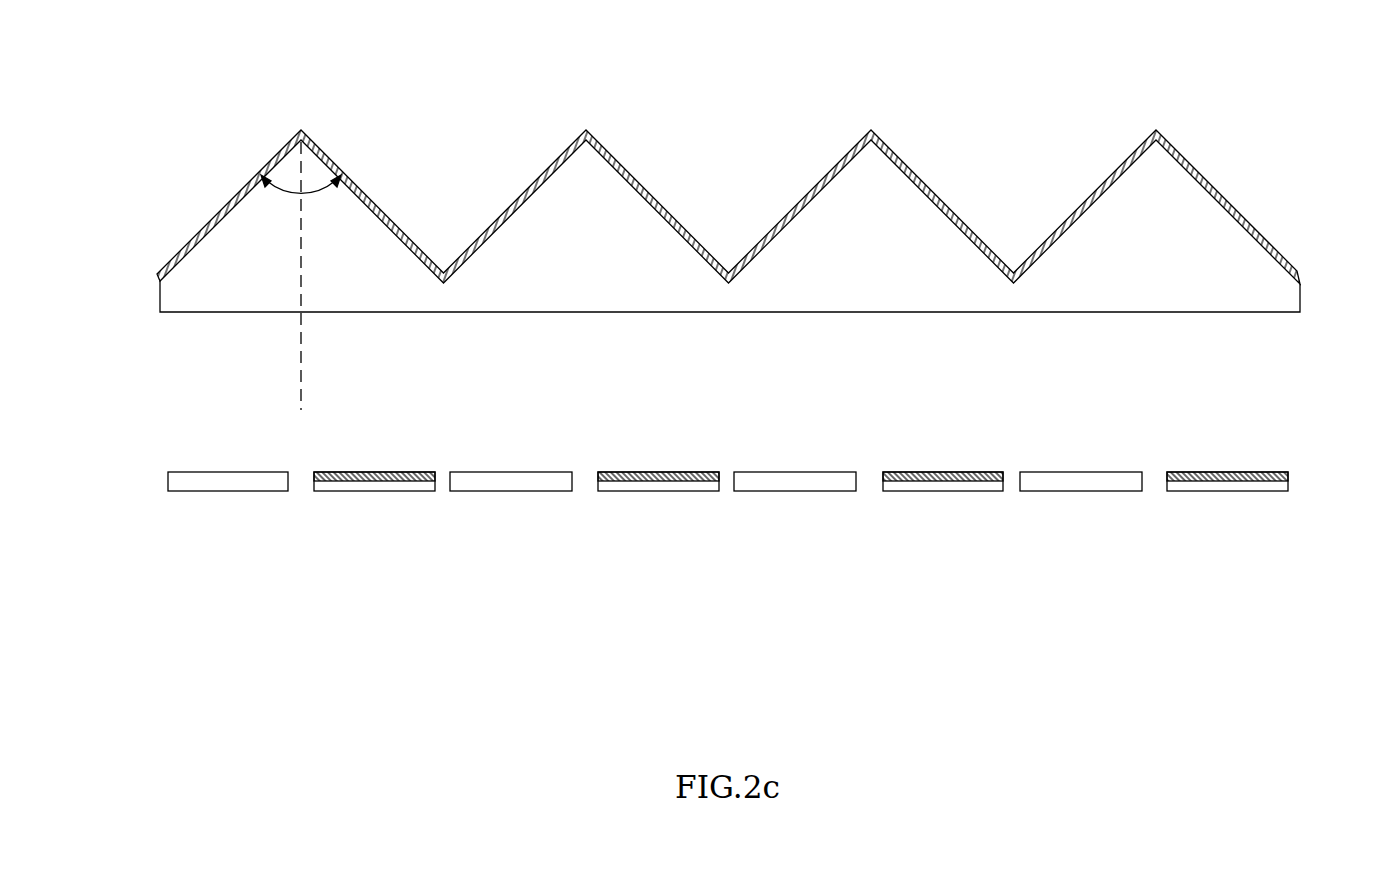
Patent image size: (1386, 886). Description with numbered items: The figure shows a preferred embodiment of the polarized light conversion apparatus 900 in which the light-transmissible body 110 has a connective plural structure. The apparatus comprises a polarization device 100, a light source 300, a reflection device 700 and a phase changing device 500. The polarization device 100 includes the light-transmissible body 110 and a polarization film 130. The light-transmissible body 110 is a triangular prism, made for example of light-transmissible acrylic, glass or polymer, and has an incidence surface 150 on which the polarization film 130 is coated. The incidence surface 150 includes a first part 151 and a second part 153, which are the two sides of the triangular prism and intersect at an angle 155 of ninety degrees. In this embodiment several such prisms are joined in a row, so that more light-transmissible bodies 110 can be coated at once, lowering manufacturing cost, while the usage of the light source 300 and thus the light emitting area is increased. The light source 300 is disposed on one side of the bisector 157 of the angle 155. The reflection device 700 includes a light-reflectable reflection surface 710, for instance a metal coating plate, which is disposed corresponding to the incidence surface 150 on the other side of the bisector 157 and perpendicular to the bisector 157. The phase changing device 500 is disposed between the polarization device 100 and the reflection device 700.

The polarization device 100 is at (160, 127).
The light-transmissible body 110 is at (197, 283).
The polarization film 130 is at (234, 191).
The incidence surface 150 is at (370, 73).
The first part 151 is at (268, 180).
The second part 153 is at (332, 180).
The angle 155 is at (313, 196).
The bisector 157 is at (304, 338).
The light source 300 is at (233, 472).
The phase changing device 500 is at (1188, 476).
The reflection device 700 is at (1188, 491).
The reflection surface 710 is at (1237, 473).
The polarized light conversion apparatus 900 is at (1318, 115).